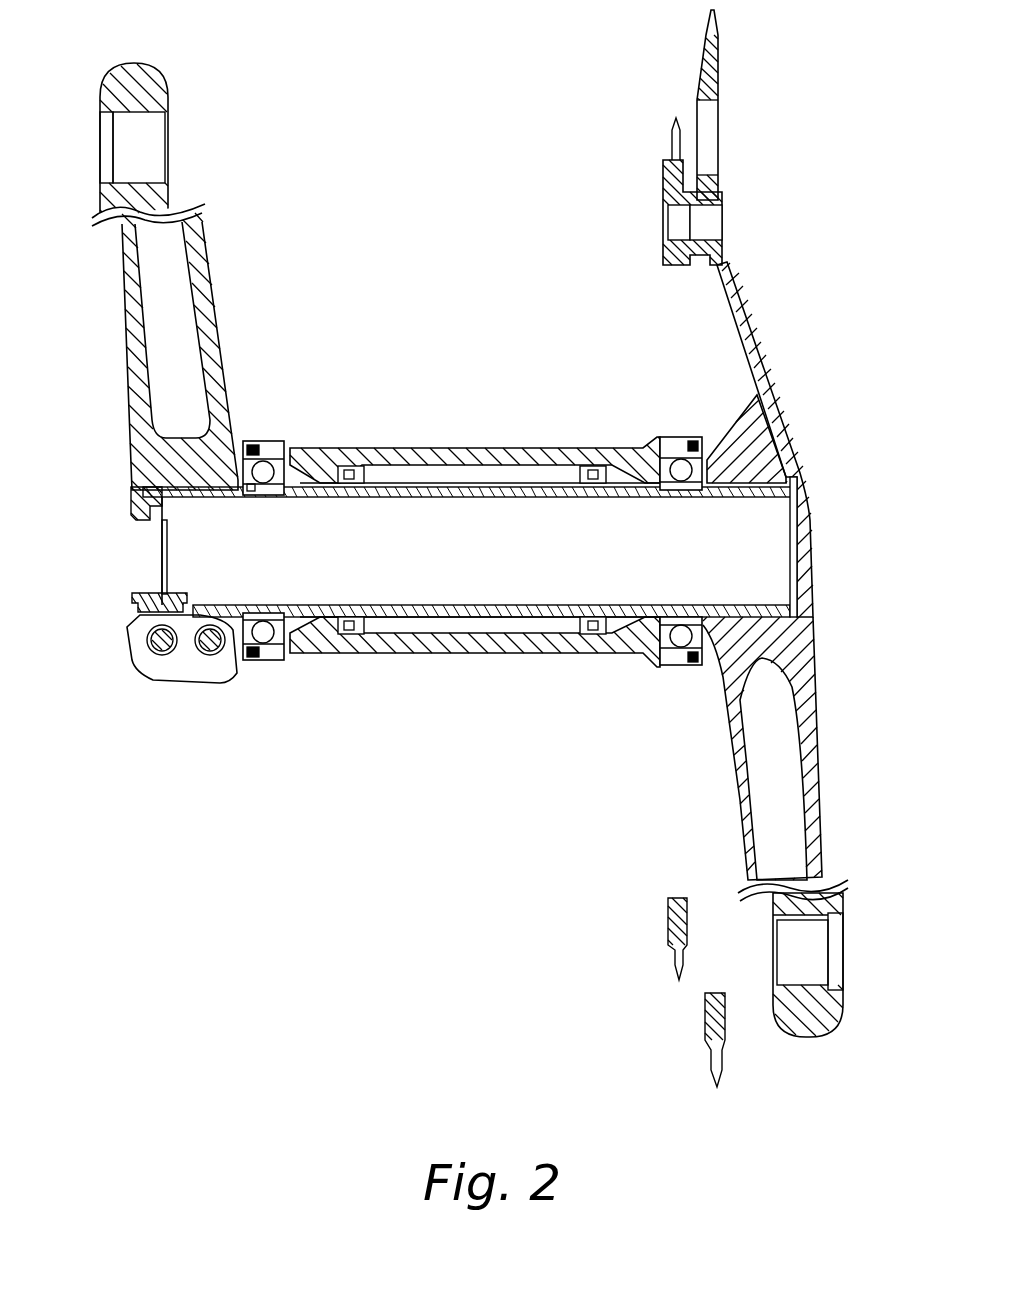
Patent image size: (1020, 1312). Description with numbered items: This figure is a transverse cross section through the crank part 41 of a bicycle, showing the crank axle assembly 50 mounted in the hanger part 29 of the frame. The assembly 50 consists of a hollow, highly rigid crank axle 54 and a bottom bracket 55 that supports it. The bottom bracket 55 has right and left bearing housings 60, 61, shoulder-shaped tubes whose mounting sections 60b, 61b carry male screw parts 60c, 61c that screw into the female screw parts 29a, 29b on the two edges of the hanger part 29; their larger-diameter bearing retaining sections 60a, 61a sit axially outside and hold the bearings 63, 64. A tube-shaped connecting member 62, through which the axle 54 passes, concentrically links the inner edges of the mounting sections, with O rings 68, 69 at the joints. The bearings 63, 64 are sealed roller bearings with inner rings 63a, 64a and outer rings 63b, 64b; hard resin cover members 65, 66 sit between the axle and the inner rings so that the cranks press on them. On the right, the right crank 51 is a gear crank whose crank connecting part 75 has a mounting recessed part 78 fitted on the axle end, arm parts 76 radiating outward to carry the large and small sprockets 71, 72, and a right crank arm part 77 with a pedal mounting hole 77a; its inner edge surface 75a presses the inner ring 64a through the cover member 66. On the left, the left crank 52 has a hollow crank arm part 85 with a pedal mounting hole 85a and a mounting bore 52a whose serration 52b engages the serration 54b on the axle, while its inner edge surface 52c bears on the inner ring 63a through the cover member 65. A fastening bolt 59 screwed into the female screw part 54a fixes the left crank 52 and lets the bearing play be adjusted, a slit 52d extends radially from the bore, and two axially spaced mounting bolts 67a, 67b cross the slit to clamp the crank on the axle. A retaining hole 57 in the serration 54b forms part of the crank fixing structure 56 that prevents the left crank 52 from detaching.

The hanger part 29 is at (490, 448).
The left female screw part 29a is at (405, 448).
The right female screw part 29b is at (550, 448).
The crank part 41 is at (408, 190).
The crank axle assembly 50 is at (432, 655).
The right crank 51 is at (759, 702).
The left crank 52 is at (228, 305).
The mounting bore 52a is at (200, 505).
The serration 52b is at (195, 510).
The inner edge surface 52c is at (262, 495).
The slit 52d is at (165, 676).
The crank axle 54 is at (430, 448).
The female screw part 54a is at (168, 537).
The serration 54b is at (148, 492).
The bottom bracket 55 is at (655, 445).
The crank fixing structure 56 is at (180, 680).
The retaining hole 57 is at (172, 585).
The fastening bolt 59 is at (130, 596).
The right bearing housing 60 is at (275, 443).
The bearing retaining section 60a is at (250, 441).
The right mounting section 60b is at (318, 448).
The male screw part 60c is at (375, 448).
The left bearing housing 61 is at (672, 443).
The bearing retaining section 61a is at (662, 440).
The left mounting section 61b is at (608, 448).
The male screw part 61c is at (580, 448).
The connecting member 62 is at (480, 655).
The right bearing 63 is at (265, 665).
The inner ring 63a is at (283, 495).
The outer ring 63b is at (287, 665).
The left bearing 64 is at (675, 660).
The inner ring 64a is at (700, 495).
The outer ring 64b is at (688, 660).
The cover member 65 is at (212, 648).
The cover member 66 is at (700, 660).
The mounting bolt 67a is at (150, 640).
The mounting bolt 67b is at (195, 660).
The O ring 68 is at (372, 655).
The O ring 69 is at (595, 650).
The sprocket 71 is at (720, 95).
The sprocket 72 is at (665, 168).
The crank connecting part 75 is at (820, 500).
The inner edge surface 75a is at (712, 465).
The arm parts 76 is at (730, 320).
The right crank arm part 77 is at (812, 720).
The pedal mounting hole 77a is at (730, 1005).
The mounting recessed part 78 is at (755, 605).
The hollow crank arm part 85 is at (125, 318).
The pedal mounting hole 85a is at (138, 181).